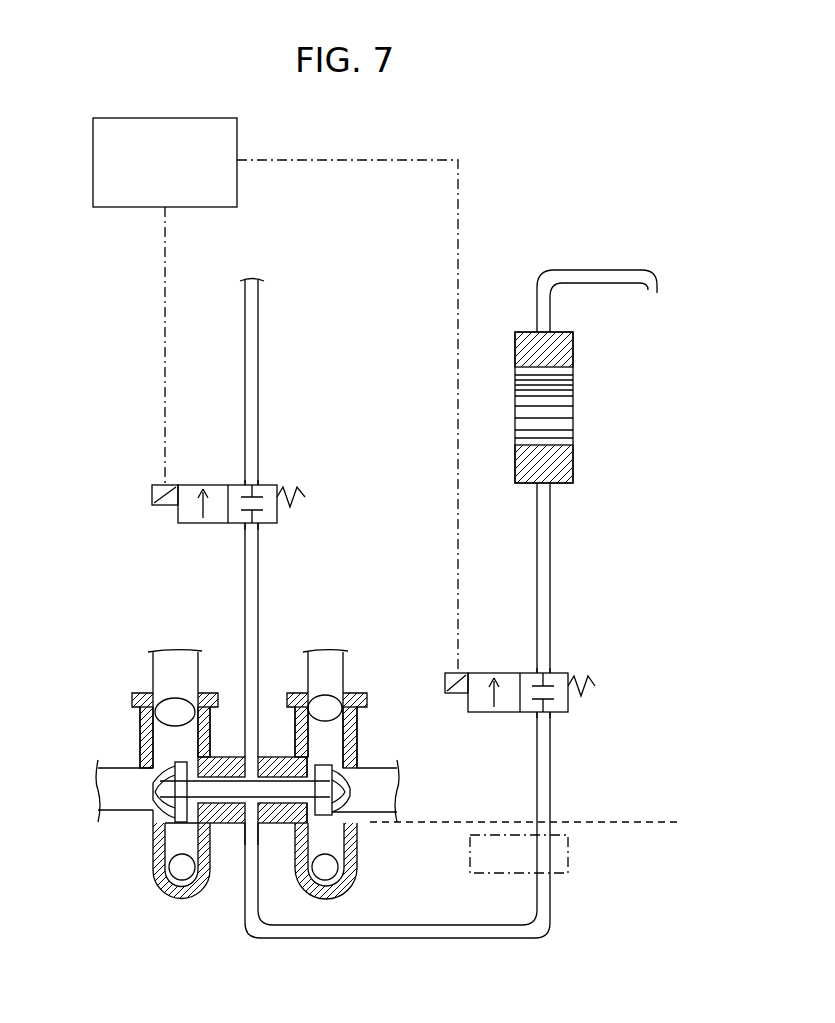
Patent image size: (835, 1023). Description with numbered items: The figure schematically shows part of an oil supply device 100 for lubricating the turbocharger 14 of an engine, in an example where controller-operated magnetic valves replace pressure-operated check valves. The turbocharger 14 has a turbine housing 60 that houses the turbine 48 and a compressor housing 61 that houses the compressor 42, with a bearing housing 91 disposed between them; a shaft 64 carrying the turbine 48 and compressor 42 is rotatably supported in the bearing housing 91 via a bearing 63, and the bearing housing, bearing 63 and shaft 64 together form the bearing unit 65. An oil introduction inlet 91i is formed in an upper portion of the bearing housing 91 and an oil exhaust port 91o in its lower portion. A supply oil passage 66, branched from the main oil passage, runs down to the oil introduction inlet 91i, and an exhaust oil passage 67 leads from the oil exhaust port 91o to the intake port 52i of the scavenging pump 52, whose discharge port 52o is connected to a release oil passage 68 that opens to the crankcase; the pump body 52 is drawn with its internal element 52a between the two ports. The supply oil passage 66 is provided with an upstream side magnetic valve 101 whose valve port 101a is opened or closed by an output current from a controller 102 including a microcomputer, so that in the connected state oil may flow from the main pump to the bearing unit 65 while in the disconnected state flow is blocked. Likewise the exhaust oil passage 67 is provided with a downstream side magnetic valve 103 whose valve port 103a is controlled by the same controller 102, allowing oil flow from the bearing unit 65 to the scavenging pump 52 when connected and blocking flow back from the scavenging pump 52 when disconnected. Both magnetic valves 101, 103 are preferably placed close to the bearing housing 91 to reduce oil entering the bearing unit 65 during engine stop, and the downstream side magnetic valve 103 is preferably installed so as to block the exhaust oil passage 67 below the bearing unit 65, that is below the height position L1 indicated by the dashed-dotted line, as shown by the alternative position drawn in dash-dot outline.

The turbocharger 14 is at (131, 683).
The compressor 42 is at (160, 790).
The turbine 48 is at (360, 792).
The scavenging pump 52 is at (515, 332).
The discharge port 52o is at (560, 350).
The filter element 52a is at (565, 410).
The intake port 52i is at (560, 463).
The turbine housing 60 is at (350, 855).
The compressor housing 61 is at (158, 882).
The bearing 63 is at (137, 745).
The shaft 64 is at (175, 796).
The bearing unit 65 is at (155, 817).
The supply oil passage 66 is at (262, 334).
The exhaust oil passage 67 is at (555, 580).
The release oil passage 68 is at (592, 270).
The bearing housing 91 is at (237, 755).
The oil introduction inlet 91i is at (262, 750).
The oil exhaust port 91o is at (238, 870).
The oil supply device 100 is at (540, 166).
The upstream side magnetic valve 101 is at (310, 489).
The valve port 101a is at (258, 480).
The controller 102 is at (122, 118).
The downstream side magnetic valve 103 is at (600, 681).
The valve port 103a is at (550, 668).
The height position L1 is at (652, 820).